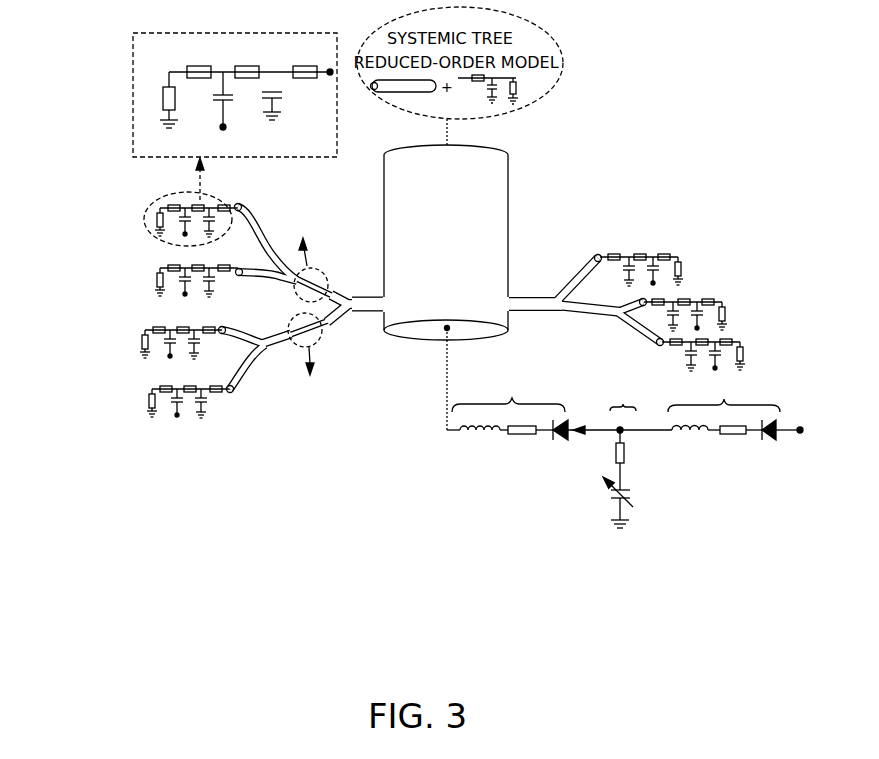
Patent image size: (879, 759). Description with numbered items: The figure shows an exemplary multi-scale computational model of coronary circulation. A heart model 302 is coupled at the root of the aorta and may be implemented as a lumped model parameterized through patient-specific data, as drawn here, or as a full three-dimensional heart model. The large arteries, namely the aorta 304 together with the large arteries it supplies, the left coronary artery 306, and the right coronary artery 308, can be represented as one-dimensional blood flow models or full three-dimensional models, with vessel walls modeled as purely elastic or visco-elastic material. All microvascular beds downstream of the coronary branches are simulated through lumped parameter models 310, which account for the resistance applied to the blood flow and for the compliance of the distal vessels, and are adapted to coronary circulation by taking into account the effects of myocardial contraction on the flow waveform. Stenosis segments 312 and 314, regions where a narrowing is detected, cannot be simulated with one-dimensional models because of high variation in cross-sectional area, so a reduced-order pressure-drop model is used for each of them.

The heart model 302 is at (447, 535).
The aorta 304 is at (513, 170).
The left coronary artery 306 is at (358, 332).
The right coronary artery 308 is at (556, 280).
The lumped parameter models 310 is at (120, 252).
The stenosis segment 312 is at (284, 362).
The stenosis segment 314 is at (334, 265).